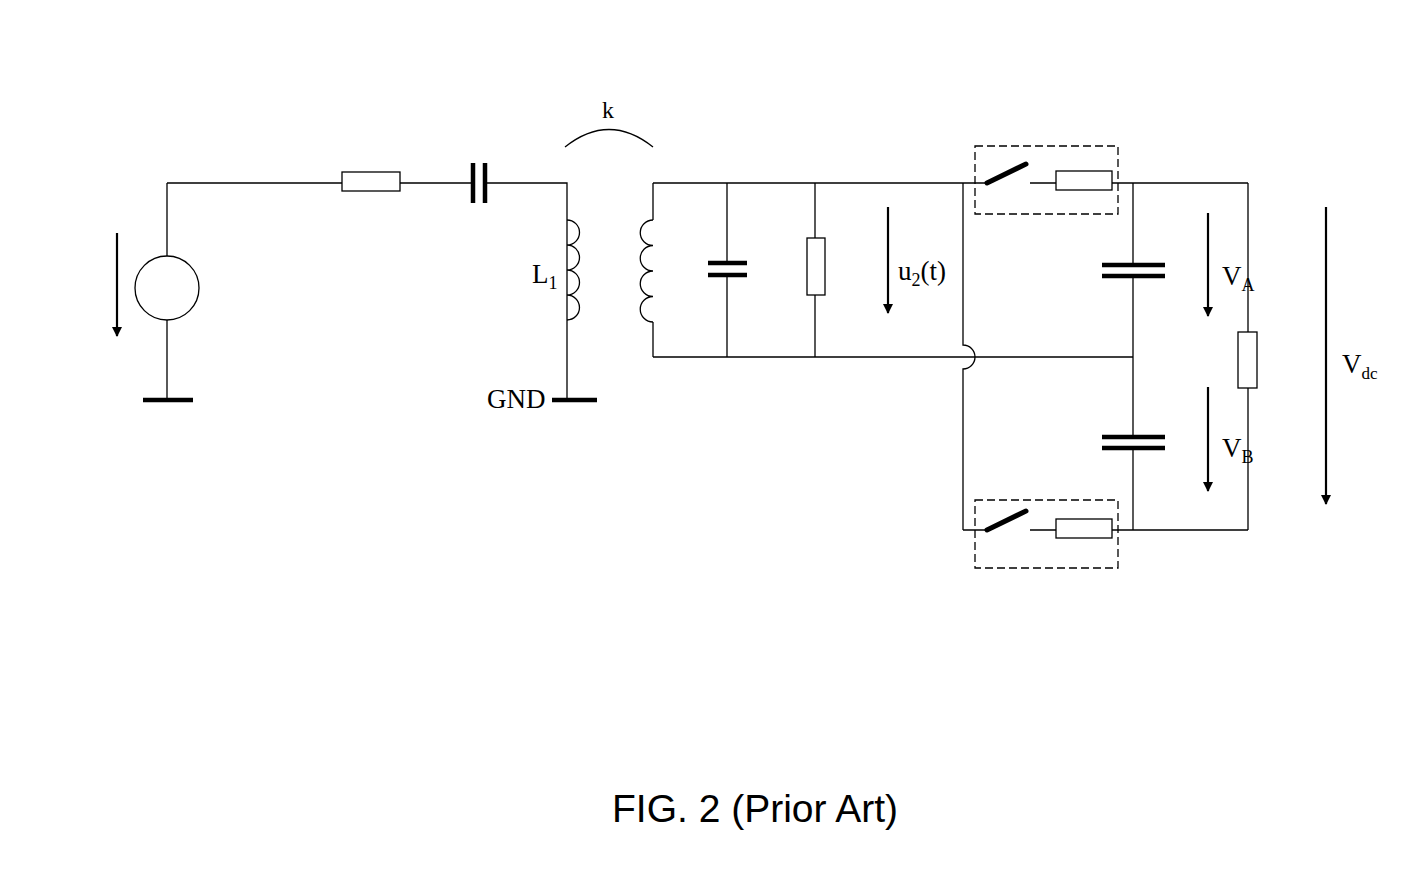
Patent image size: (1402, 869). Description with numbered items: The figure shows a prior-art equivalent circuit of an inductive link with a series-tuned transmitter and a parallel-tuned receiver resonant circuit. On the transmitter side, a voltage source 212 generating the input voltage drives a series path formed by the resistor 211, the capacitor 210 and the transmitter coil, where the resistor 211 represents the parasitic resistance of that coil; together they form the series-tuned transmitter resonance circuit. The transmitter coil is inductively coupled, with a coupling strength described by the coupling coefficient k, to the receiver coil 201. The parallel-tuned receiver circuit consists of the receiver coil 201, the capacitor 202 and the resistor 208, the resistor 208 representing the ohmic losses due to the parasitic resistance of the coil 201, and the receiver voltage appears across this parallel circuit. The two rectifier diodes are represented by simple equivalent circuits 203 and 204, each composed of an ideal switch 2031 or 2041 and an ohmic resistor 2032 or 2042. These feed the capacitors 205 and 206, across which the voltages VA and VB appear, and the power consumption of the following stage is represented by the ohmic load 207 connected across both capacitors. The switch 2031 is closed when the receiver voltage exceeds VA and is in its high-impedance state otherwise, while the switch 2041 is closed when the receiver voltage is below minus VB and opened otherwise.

The receiver coil 201 is at (663, 295).
The capacitor 202 is at (752, 282).
The equivalent circuit 203 is at (1077, 143).
The ideal switch 2031 is at (1008, 172).
The ohmic resistor 2032 is at (1087, 173).
The equivalent circuit 204 is at (1082, 565).
The ideal switch 2041 is at (1012, 530).
The ohmic resistor 2042 is at (1082, 537).
The capacitor 205 is at (1145, 240).
The capacitor 206 is at (1152, 462).
The ohmic load 207 is at (1270, 337).
The resistor 208 is at (833, 252).
The capacitor 210 is at (498, 158).
The resistor 211 is at (350, 152).
The voltage source 212 is at (147, 245).